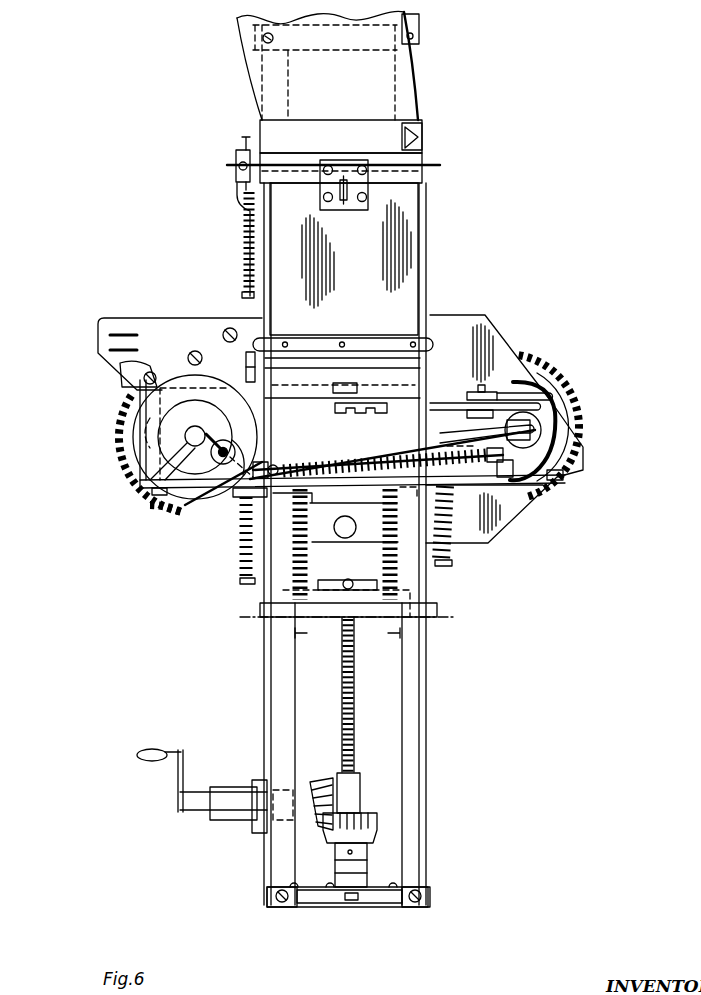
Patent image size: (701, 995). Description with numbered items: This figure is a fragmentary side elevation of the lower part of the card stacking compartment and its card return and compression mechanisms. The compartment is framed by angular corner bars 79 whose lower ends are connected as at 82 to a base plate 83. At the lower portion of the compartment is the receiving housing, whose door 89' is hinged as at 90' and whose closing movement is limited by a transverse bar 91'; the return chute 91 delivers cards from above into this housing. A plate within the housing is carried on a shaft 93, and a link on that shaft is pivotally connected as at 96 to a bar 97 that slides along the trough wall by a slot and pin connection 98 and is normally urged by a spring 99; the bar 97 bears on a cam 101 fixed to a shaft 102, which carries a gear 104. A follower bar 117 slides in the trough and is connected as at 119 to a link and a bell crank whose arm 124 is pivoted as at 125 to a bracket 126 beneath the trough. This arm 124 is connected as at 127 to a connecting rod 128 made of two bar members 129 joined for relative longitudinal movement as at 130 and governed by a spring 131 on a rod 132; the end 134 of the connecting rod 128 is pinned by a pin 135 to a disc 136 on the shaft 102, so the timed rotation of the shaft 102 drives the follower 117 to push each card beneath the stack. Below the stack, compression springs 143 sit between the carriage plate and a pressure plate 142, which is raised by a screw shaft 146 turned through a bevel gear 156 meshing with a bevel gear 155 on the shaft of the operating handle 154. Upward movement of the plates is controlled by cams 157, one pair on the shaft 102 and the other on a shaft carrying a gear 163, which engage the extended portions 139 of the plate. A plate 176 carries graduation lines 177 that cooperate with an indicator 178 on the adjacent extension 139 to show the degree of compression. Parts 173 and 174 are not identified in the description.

The corner bars 79 is at (420, 27).
The return chute 91 is at (352, 66).
The hinge 90' is at (366, 165).
The shaft 93 is at (440, 162).
The pivotal connection 96 is at (226, 165).
The door 89' is at (363, 544).
The spring 99 is at (243, 234).
The bar 97 is at (243, 262).
The slot and pin connection 98 is at (249, 372).
The follower bar 117 is at (378, 372).
The connection 119 is at (341, 411).
The plate 176 is at (158, 333).
The graduation lines 177 is at (98, 329).
The indicator 178 is at (128, 372).
The transverse bar 91' is at (504, 416).
The gear 104 is at (128, 460).
The cam 101 is at (134, 425).
The pin 135 is at (210, 470).
The disc 136 is at (227, 428).
The end of connecting rod 134 is at (238, 447).
The shaft 102 is at (152, 491).
The extended portions 139 is at (207, 493).
The longitudinal connection 130 is at (360, 462).
The bar members 129 is at (425, 446).
The arm 173 is at (530, 427).
The connecting rod 128 is at (382, 478).
The rod 132 is at (232, 498).
The spring 131 is at (236, 585).
The gear 163 is at (567, 371).
The bracket 126 is at (553, 397).
The arm 124 is at (580, 409).
The pivotal connection 125 is at (503, 380).
The cams 157 is at (523, 390).
The connection 127 is at (477, 483).
The bracket 174 is at (563, 474).
The compression springs 143 is at (308, 573).
The pressure plate 142 is at (375, 612).
The screw shaft 146 is at (355, 713).
The bevel gear 156 is at (372, 823).
The bevel gear 155 is at (320, 822).
The operating handle 154 is at (147, 761).
The base plate 83 is at (378, 906).
The connection 82 is at (283, 903).